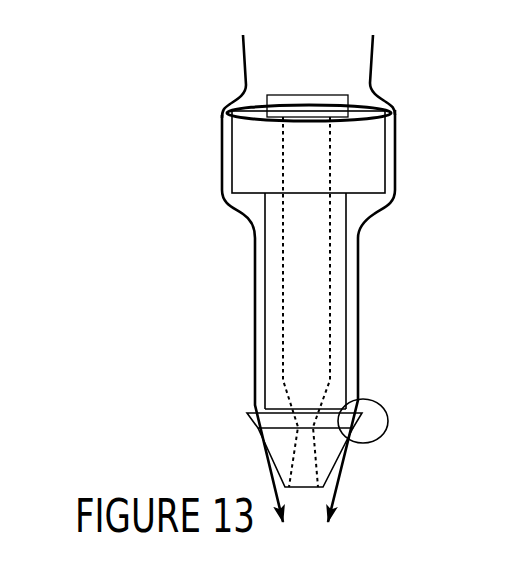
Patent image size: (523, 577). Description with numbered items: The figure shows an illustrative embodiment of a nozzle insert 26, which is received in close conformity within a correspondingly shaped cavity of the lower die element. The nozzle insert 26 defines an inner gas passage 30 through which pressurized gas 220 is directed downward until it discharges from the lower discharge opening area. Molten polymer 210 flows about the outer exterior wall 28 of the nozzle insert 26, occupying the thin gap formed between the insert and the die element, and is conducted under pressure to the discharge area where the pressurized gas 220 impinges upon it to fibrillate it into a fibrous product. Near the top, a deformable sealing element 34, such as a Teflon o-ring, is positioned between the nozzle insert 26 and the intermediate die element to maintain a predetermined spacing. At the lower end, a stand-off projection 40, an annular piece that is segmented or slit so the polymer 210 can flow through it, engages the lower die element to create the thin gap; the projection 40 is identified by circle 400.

The nozzle insert 26 is at (100, 93).
The polymer 210 is at (237, 88).
The pressurized gas 220 is at (308, 83).
The deformable sealing element 34 is at (393, 107).
The outer exterior wall 28 is at (260, 297).
The inner gas passage 30 is at (312, 250).
The stand-off projection 40 is at (233, 412).
The circle 400 is at (375, 402).